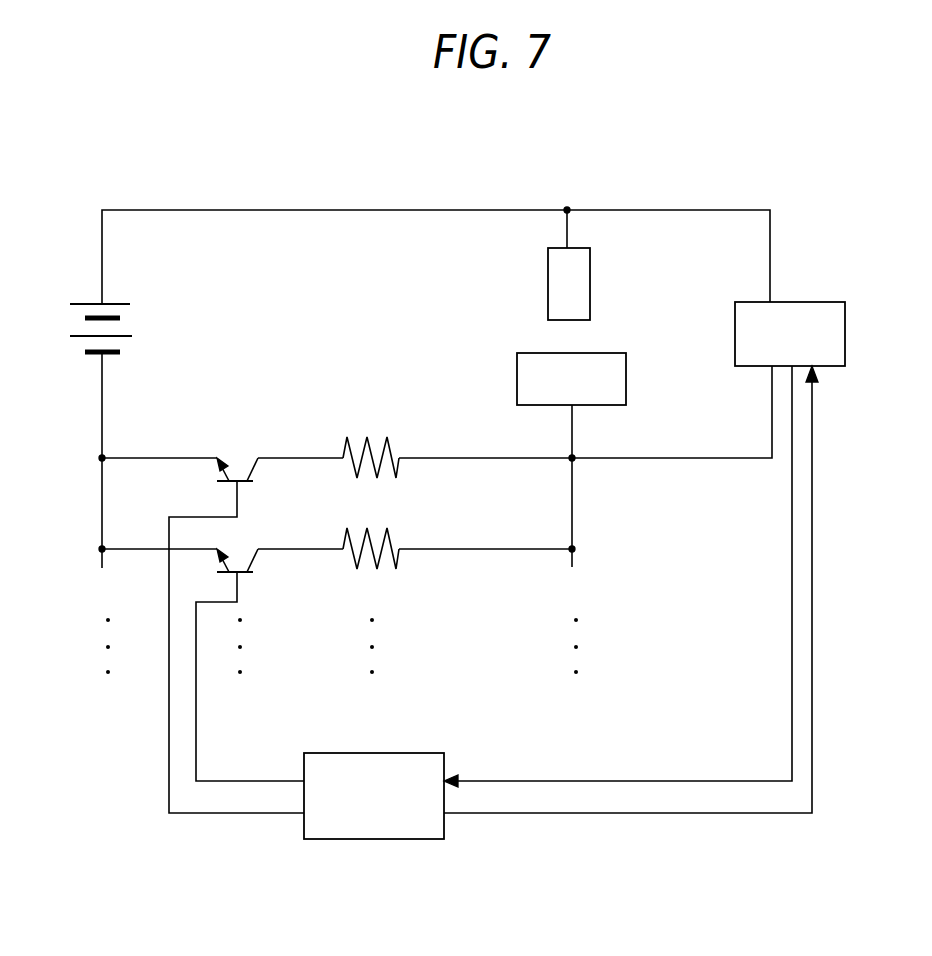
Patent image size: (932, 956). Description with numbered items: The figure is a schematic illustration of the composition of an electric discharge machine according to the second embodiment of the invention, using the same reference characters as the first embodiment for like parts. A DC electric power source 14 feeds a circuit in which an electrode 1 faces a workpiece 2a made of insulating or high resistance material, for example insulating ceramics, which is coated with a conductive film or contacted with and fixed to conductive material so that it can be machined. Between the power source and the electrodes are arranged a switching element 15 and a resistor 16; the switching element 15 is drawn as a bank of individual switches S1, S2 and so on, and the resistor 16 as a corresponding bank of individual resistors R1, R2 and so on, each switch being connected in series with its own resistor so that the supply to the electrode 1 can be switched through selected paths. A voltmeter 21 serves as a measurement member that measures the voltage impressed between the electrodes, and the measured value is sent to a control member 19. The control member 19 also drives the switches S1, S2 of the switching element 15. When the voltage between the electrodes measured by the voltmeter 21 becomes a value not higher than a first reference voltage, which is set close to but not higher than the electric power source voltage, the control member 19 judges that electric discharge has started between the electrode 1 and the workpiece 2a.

The DC electric power source 14 is at (118, 303).
The electrode 1 is at (590, 282).
The workpiece 2a is at (626, 378).
The voltmeter 21 is at (845, 332).
The control member 19 is at (373, 753).
The switching element 15 is at (225, 549).
The resistor 16 is at (416, 549).
The switch S1 is at (195, 454).
The switch S2 is at (195, 545).
The resistor R1 is at (388, 453).
The resistor R2 is at (388, 544).